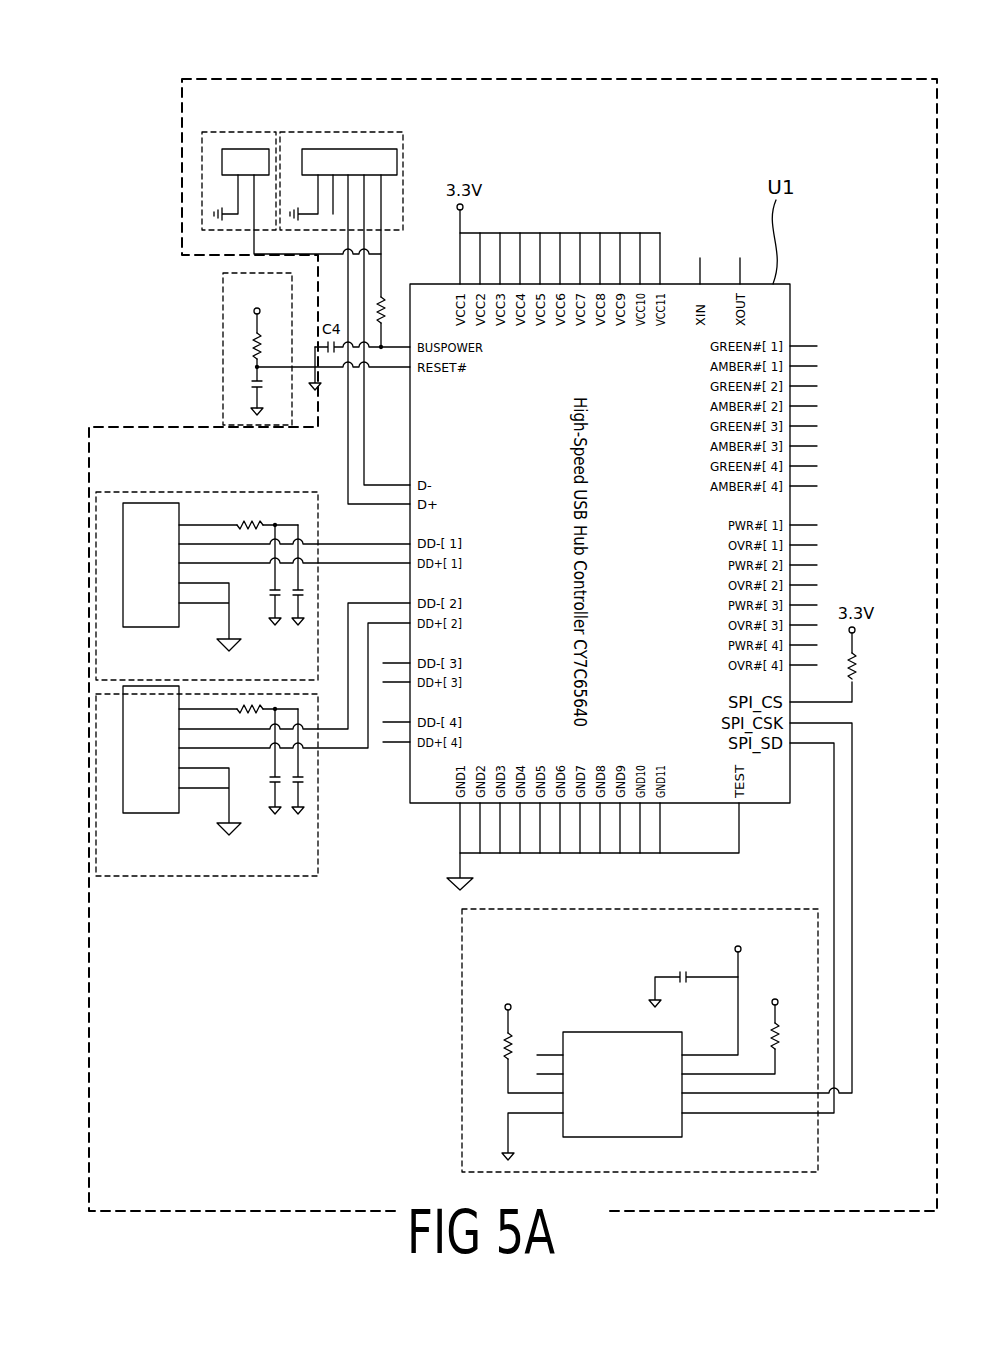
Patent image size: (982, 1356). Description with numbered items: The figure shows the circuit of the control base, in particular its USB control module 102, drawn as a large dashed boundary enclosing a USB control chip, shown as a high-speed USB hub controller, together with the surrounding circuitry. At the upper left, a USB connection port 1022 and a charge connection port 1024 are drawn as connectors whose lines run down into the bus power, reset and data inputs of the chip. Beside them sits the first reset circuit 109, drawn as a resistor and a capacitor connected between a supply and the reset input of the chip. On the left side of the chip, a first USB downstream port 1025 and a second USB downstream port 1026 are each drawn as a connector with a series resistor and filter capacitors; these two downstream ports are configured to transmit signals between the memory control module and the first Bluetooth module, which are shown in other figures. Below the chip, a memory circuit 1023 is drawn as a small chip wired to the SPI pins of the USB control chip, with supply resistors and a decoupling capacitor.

The USB control module 102 is at (513, 628).
The USB connection port 1022 is at (403, 158).
The charge connection port 1024 is at (202, 180).
The first reset circuit 109 is at (222, 305).
The first USB downstream port 1025 is at (130, 572).
The second USB downstream port 1026 is at (130, 758).
The memory circuit 1023 is at (462, 930).